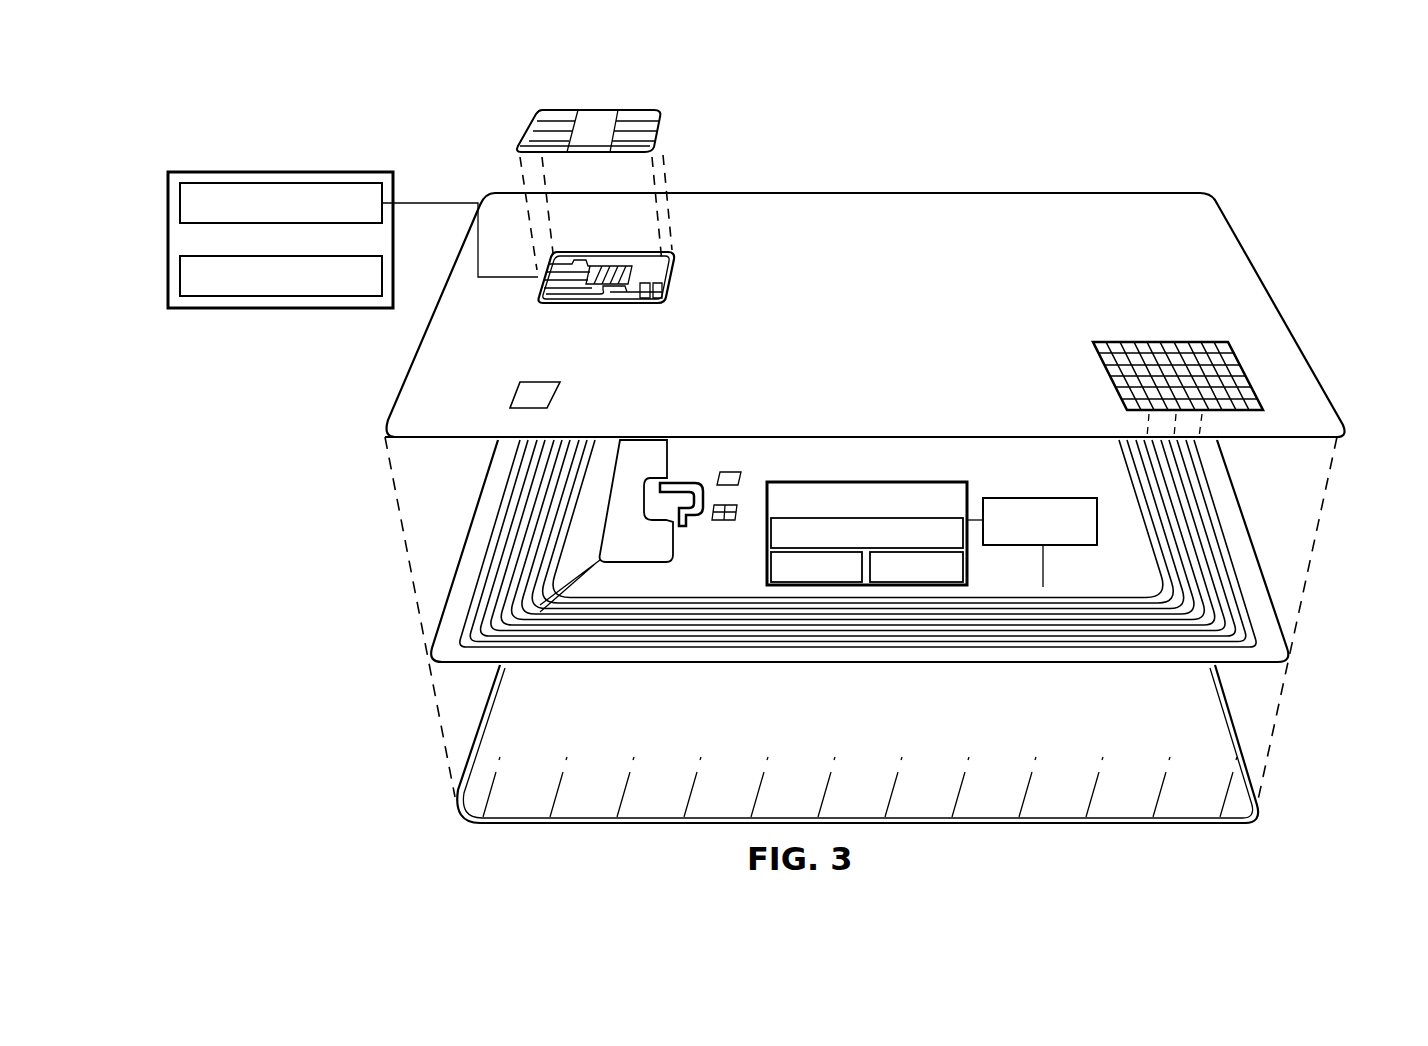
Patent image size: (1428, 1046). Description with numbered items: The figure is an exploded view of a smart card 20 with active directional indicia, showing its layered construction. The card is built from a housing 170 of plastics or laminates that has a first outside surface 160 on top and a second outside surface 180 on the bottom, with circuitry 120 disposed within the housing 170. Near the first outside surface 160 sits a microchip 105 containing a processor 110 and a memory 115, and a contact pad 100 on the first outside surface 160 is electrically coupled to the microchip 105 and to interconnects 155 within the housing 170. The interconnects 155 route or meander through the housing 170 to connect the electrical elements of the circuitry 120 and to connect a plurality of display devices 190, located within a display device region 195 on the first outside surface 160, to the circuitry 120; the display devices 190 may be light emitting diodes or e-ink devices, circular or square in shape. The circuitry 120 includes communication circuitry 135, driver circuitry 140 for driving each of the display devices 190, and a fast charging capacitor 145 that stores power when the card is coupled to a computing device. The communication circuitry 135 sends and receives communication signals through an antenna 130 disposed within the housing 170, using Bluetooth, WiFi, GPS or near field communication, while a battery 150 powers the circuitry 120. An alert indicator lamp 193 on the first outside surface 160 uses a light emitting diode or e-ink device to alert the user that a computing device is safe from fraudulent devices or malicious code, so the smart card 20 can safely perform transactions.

The smart card 20 is at (410, 112).
The contact pad 100 is at (650, 110).
The microchip 105 is at (235, 170).
The processor 110 is at (180, 203).
The memory 115 is at (180, 275).
The circuitry 120 is at (968, 492).
The antenna 130 is at (630, 542).
The communication circuitry 135 is at (771, 530).
The driver circuitry 140 is at (771, 562).
The fast charging capacitor (FCCAP) 145 is at (965, 560).
The battery 150 is at (1033, 496).
The interconnects 155 is at (535, 637).
The first outside surface 160 is at (1260, 262).
The housing 170 is at (1253, 547).
The second outside surface 180 is at (1236, 805).
The display devices 190 is at (1218, 340).
The alert indicator lamp 193 is at (523, 398).
The display device region 195 is at (1242, 365).